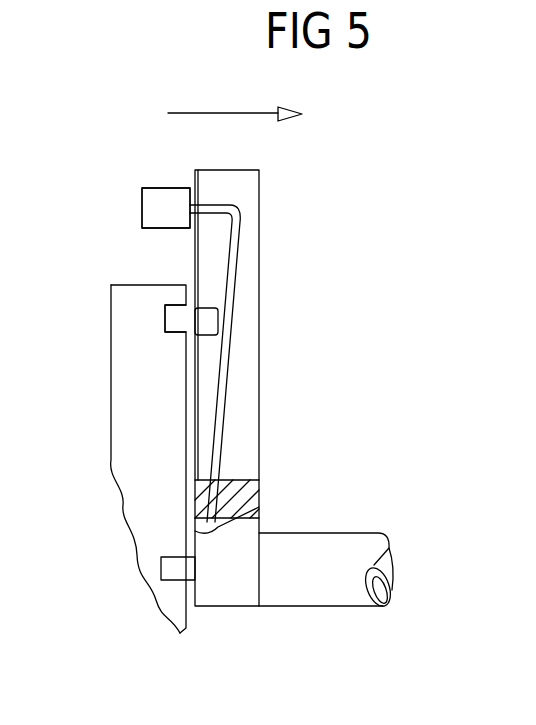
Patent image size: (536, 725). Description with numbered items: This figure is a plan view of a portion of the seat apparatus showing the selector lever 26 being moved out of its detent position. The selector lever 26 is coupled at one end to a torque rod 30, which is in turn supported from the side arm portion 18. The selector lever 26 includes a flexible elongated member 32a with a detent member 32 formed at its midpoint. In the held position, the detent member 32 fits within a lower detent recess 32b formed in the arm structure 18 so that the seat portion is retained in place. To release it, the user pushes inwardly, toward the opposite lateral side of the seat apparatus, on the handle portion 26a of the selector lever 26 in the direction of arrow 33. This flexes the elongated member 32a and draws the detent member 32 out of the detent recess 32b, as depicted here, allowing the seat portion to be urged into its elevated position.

The side arm portion 18 is at (128, 413).
The selector lever 26 is at (114, 180).
The handle portion 26a is at (145, 214).
The torque rod 30 is at (308, 545).
The detent member 32 is at (208, 306).
The flexible elongated member 32a is at (222, 370).
The lower detent recess 32b is at (166, 320).
The arrow 33 is at (210, 113).